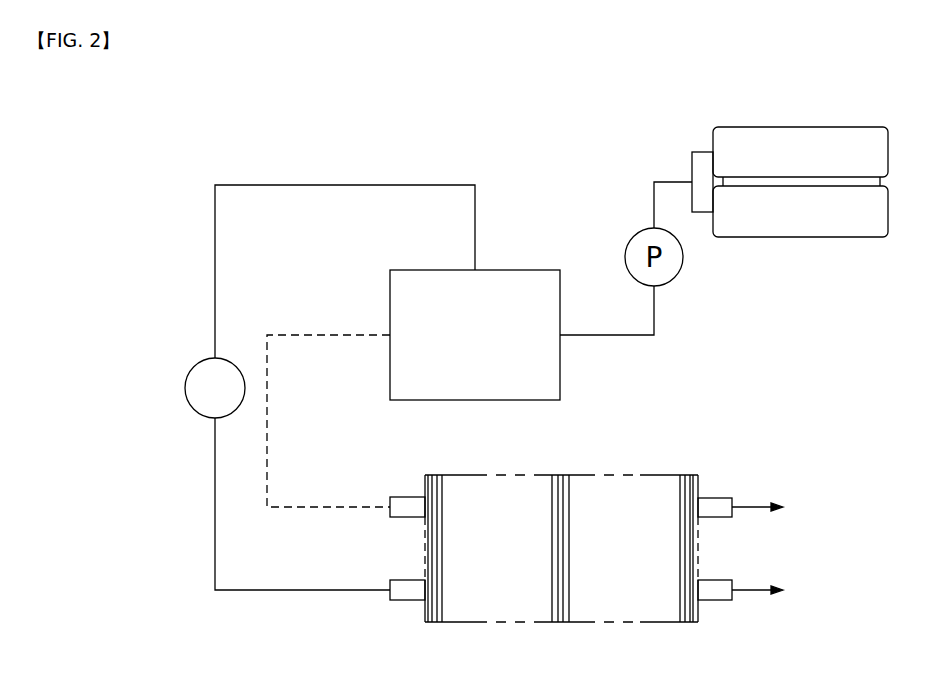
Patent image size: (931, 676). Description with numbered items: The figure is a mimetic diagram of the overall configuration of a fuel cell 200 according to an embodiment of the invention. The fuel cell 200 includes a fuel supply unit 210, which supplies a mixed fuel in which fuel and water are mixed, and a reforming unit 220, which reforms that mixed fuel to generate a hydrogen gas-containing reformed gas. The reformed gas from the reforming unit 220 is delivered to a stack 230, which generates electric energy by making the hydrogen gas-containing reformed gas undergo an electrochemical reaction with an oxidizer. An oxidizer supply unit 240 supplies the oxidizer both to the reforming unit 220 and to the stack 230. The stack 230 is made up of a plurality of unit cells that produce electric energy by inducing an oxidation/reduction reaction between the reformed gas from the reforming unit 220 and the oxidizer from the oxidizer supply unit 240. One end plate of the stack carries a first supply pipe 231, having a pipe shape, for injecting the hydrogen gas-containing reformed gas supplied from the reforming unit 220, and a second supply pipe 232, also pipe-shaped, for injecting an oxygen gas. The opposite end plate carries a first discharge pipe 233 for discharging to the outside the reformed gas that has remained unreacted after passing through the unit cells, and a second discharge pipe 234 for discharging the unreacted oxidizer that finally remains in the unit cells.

The fuel cell 200 is at (326, 89).
The fuel supply unit 210 is at (682, 135).
The reforming unit 220 is at (420, 260).
The stack 230 is at (568, 470).
The first supply pipe 231 is at (405, 497).
The second supply pipe 232 is at (405, 602).
The first discharge pipe 233 is at (717, 602).
The second discharge pipe 234 is at (717, 498).
The oxidizer supply unit 240 is at (188, 361).